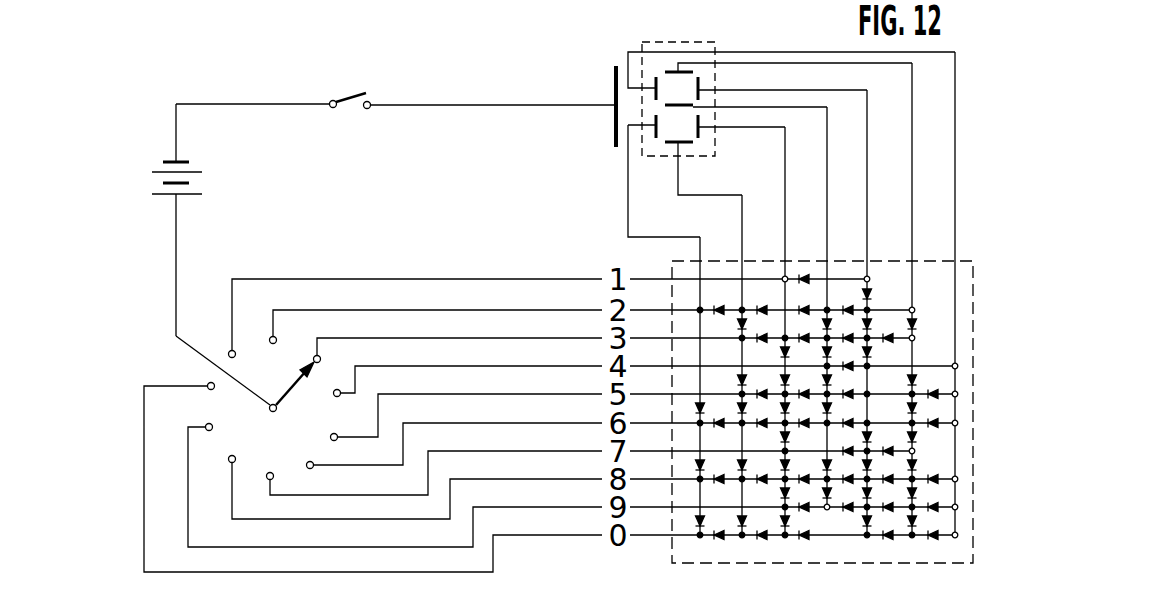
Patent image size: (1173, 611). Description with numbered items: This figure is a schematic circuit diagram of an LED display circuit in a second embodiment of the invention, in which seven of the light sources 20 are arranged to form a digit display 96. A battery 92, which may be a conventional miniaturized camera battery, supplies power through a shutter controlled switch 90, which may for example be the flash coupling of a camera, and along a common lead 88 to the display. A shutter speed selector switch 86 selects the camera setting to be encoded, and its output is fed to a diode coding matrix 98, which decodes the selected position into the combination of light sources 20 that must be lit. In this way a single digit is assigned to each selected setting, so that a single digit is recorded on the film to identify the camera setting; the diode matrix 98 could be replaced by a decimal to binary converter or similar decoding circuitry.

The light sources 20 is at (698, 118).
The shutter speed selector switch 86 is at (285, 444).
The common lead 88 is at (495, 107).
The shutter controlled switch 90 is at (352, 93).
The battery 92 is at (195, 173).
The digit display 96 is at (694, 83).
The diode coding matrix 98 is at (974, 467).